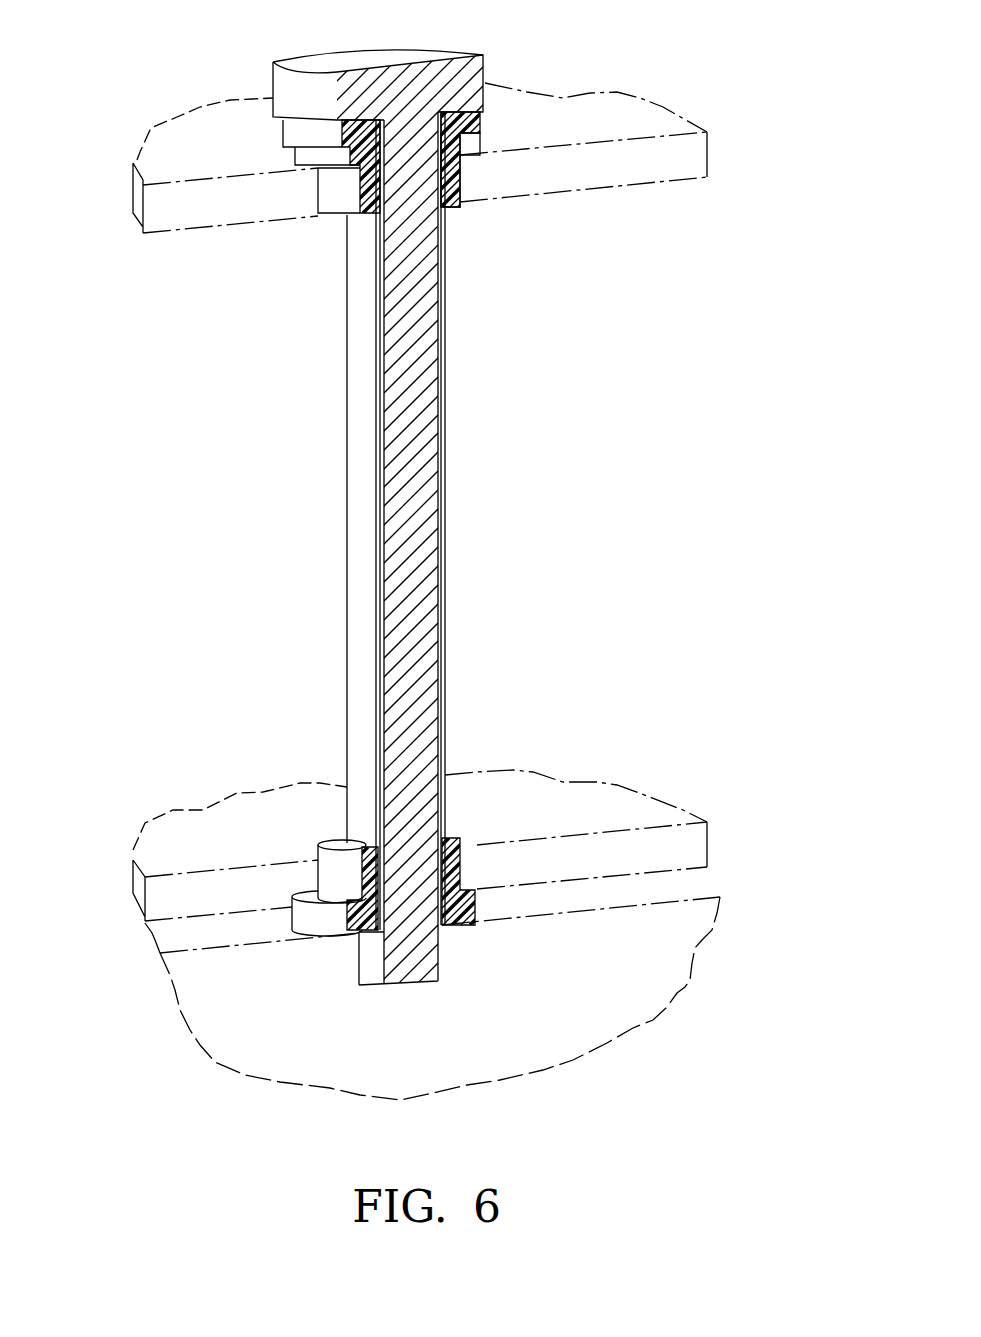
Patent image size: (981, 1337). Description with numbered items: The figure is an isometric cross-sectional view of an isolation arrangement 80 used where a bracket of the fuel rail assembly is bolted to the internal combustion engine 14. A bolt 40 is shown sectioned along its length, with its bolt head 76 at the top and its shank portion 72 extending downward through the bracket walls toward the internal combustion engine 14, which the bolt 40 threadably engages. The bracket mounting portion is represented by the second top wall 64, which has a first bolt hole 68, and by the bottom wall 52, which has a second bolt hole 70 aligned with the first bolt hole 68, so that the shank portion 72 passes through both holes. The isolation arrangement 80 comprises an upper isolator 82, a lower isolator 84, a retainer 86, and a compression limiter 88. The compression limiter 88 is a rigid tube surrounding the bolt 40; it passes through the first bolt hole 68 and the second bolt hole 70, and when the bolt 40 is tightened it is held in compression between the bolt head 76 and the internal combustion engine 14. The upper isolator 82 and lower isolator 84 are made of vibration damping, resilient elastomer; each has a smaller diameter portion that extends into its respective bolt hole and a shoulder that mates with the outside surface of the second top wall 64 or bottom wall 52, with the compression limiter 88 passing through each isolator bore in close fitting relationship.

The internal combustion engine 14 is at (647, 977).
The bolt 40 is at (490, 520).
The bottom wall 52 is at (605, 808).
The second top wall 64 is at (180, 150).
The first bolt hole 68 is at (455, 207).
The second bolt hole 70 is at (370, 847).
The shank portion 72 is at (428, 407).
The bolt head 76 is at (285, 75).
The isolation arrangement 80 is at (665, 303).
The upper isolator 82 is at (370, 215).
The lower isolator 84 is at (475, 915).
The retainer 86 is at (477, 118).
The compression limiter 88 is at (443, 333).